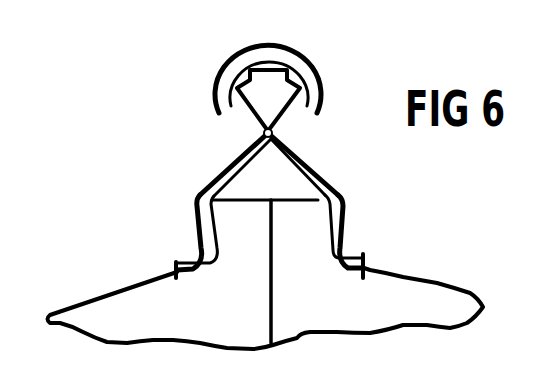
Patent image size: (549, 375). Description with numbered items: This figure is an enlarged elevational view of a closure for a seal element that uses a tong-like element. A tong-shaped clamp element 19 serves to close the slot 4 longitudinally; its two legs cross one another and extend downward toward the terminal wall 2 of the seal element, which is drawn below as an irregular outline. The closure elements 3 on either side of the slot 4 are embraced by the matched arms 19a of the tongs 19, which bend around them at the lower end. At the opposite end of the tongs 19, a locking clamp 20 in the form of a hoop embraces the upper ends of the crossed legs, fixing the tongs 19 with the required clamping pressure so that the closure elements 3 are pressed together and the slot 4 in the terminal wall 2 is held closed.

The terminal wall 2 is at (180, 323).
The closure elements 3 is at (240, 211).
The slot 4 is at (272, 253).
The tong-shaped clamp element 19 is at (302, 163).
The matched arms 19a is at (203, 240).
The locking clamp 20 is at (308, 63).